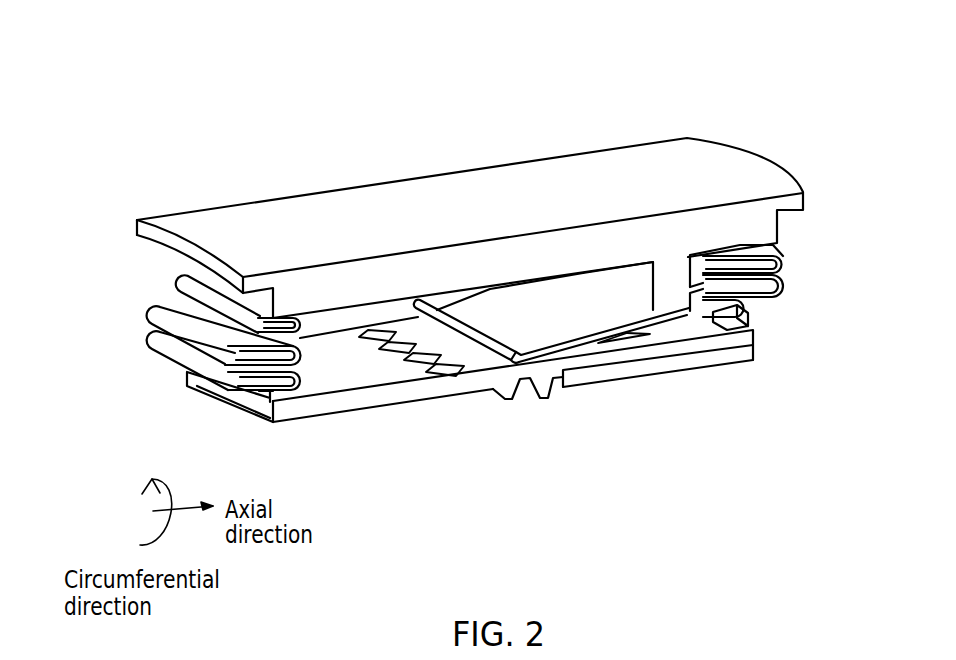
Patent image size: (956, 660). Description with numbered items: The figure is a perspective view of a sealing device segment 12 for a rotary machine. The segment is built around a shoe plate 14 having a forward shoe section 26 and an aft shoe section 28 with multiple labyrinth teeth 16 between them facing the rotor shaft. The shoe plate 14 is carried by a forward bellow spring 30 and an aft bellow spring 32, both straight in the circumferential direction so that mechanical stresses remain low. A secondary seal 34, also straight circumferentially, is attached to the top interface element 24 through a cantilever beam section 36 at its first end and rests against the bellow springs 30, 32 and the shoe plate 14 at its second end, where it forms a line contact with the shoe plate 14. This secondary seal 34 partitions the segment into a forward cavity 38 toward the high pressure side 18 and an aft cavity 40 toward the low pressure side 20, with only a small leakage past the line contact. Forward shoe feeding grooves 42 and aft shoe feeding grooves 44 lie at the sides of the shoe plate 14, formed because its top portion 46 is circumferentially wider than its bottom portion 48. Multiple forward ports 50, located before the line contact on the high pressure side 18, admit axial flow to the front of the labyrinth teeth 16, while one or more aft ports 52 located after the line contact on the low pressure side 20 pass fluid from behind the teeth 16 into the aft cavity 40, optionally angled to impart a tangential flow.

The sealing device segment 12 is at (742, 84).
The shoe plate 14 is at (197, 388).
The labyrinth teeth 16 is at (542, 388).
The high pressure side 18 is at (137, 295).
The low pressure side 20 is at (768, 308).
The top interface element 24 is at (237, 213).
The forward shoe section 26 is at (275, 437).
The aft shoe section 28 is at (751, 358).
The forward bellow spring 30 is at (173, 355).
The aft bellow spring 32 is at (784, 279).
The secondary seal 34 is at (526, 302).
The cantilever beam section 36 is at (688, 257).
The forward cavity 38 is at (450, 345).
The aft cavity 40 is at (655, 328).
The forward shoe feeding grooves 42 is at (267, 420).
The aft shoe feeding grooves 44 is at (757, 347).
The top portion 46 is at (312, 407).
The bottom portion 48 is at (333, 415).
The forward ports 50 is at (422, 358).
The aft ports 52 is at (622, 337).